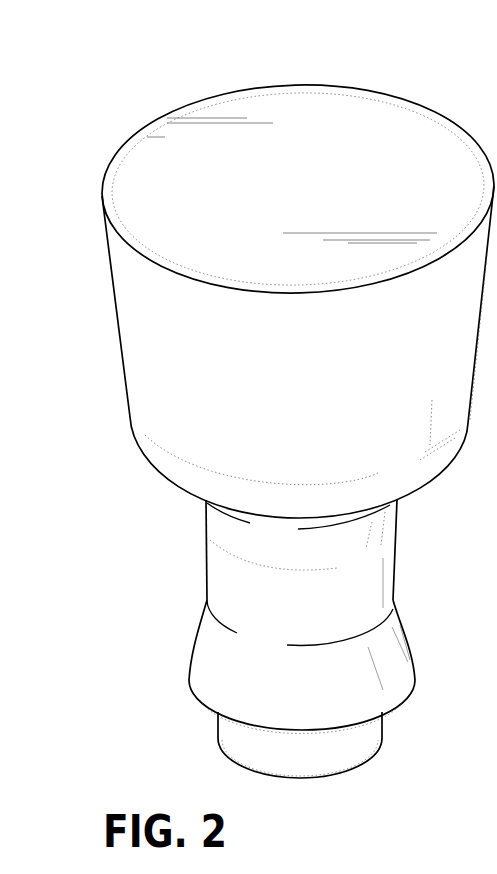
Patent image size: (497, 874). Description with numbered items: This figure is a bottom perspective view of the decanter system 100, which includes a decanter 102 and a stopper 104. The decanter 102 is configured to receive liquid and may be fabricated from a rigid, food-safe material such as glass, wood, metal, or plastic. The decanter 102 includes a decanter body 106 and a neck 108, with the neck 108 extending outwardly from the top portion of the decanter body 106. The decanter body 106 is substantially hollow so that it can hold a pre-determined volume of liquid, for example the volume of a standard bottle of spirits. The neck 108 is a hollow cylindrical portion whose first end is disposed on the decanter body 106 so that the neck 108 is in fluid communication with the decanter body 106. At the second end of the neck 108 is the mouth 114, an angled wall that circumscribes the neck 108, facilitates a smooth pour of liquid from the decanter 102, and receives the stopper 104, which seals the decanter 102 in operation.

The decanter system 100 is at (257, 403).
The decanter 102 is at (132, 352).
The stopper 104 is at (382, 743).
The decanter body 106 is at (257, 190).
The neck 108 is at (383, 577).
The mouth 114 is at (192, 640).